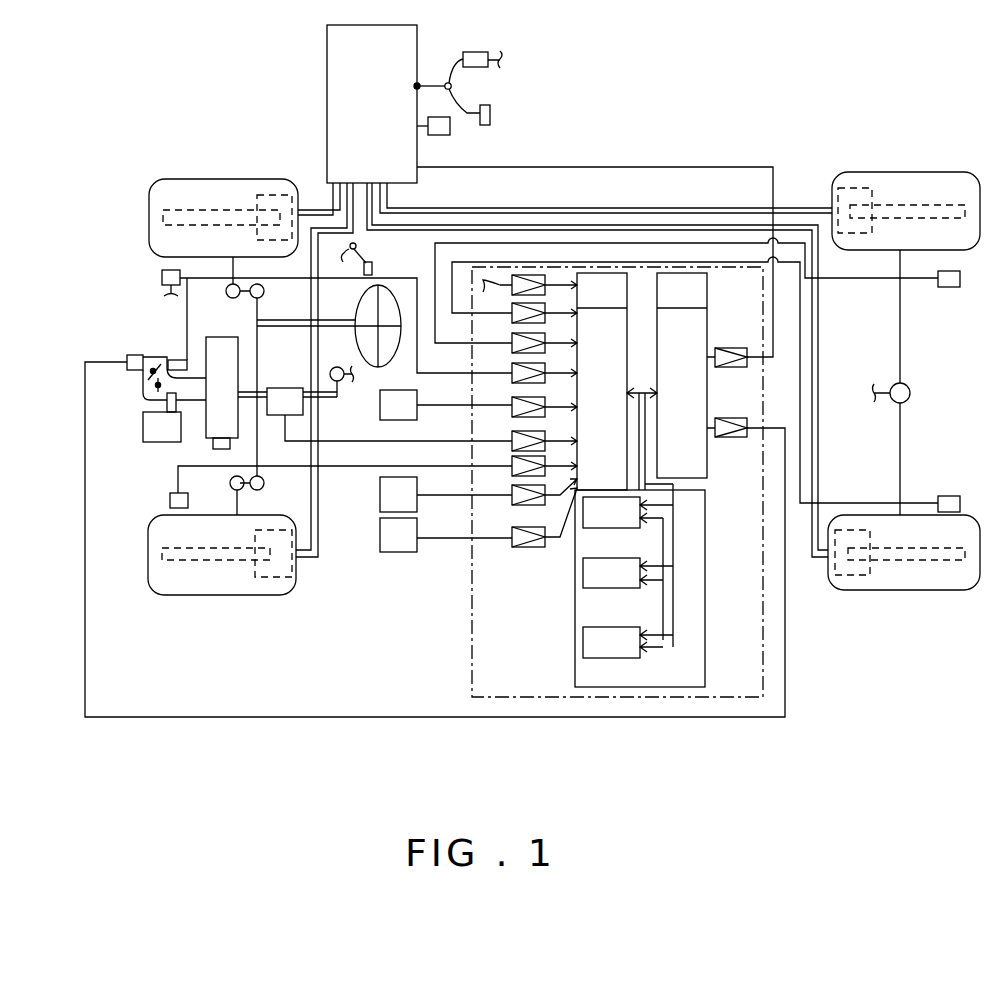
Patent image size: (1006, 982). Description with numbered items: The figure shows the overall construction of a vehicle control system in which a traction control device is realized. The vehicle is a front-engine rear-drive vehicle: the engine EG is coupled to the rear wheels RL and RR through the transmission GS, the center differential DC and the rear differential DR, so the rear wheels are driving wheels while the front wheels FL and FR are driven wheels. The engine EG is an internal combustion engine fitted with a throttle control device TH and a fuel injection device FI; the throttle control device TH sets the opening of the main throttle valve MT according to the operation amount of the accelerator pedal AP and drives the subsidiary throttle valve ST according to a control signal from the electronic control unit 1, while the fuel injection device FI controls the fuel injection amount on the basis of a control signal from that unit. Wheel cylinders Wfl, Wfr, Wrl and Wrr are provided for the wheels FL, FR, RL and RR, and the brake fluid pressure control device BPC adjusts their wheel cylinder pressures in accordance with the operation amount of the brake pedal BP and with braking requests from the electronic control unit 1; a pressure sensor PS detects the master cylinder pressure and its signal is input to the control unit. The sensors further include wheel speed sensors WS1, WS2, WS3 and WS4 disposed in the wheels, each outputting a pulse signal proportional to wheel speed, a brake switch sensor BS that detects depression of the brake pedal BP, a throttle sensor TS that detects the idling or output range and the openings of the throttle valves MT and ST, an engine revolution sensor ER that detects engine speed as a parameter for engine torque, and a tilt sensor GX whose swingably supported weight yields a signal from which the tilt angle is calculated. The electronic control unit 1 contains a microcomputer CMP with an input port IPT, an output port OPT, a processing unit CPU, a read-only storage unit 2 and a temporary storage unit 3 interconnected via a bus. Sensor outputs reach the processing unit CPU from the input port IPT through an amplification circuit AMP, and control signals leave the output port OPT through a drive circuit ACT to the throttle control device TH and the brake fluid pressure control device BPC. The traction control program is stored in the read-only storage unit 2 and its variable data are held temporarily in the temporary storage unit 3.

The brake fluid pressure control device BPC is at (564, 291).
The brake switch sensor BS is at (478, 52).
The brake pedal BP is at (467, 99).
The pressure sensor PS is at (433, 135).
The front-right wheel FR is at (175, 182).
The wheel cylinder Wfr is at (268, 192).
The wheel speed sensor WS2 is at (162, 278).
The throttle control device TH is at (131, 355).
The throttle sensor TS is at (176, 360).
The subsidiary throttle valve ST is at (150, 372).
The main throttle valve MT is at (155, 388).
The fuel injection device FI is at (162, 417).
The engine EG is at (222, 387).
The engine revolution sensor ER is at (213, 444).
The transmission GS is at (375, 414).
The center differential DC is at (337, 367).
The accelerator pedal AP is at (370, 255).
The wheel speed sensor WS1 is at (170, 500).
The front-left wheel FL is at (175, 597).
The wheel cylinder Wfl is at (282, 577).
The tilt sensor GX is at (446, 535).
The electronic control unit 1 is at (470, 600).
The amplification circuit AMP is at (523, 547).
The wheel speed sensor WS4 is at (942, 287).
The wheel speed sensor WS3 is at (948, 496).
The input port IPT is at (602, 381).
The output port OPT is at (682, 375).
The drive circuit ACT is at (730, 348).
The microcomputer CMP is at (618, 585).
The processing unit CPU is at (628, 512).
The ROM 2 is at (583, 573).
The RAM 3 is at (583, 645).
The rear-right wheel RR is at (932, 172).
The wheel cylinder Wrr is at (842, 185).
The rear differential DR is at (912, 393).
The rear-left wheel RL is at (937, 592).
The wheel cylinder Wrl is at (848, 592).